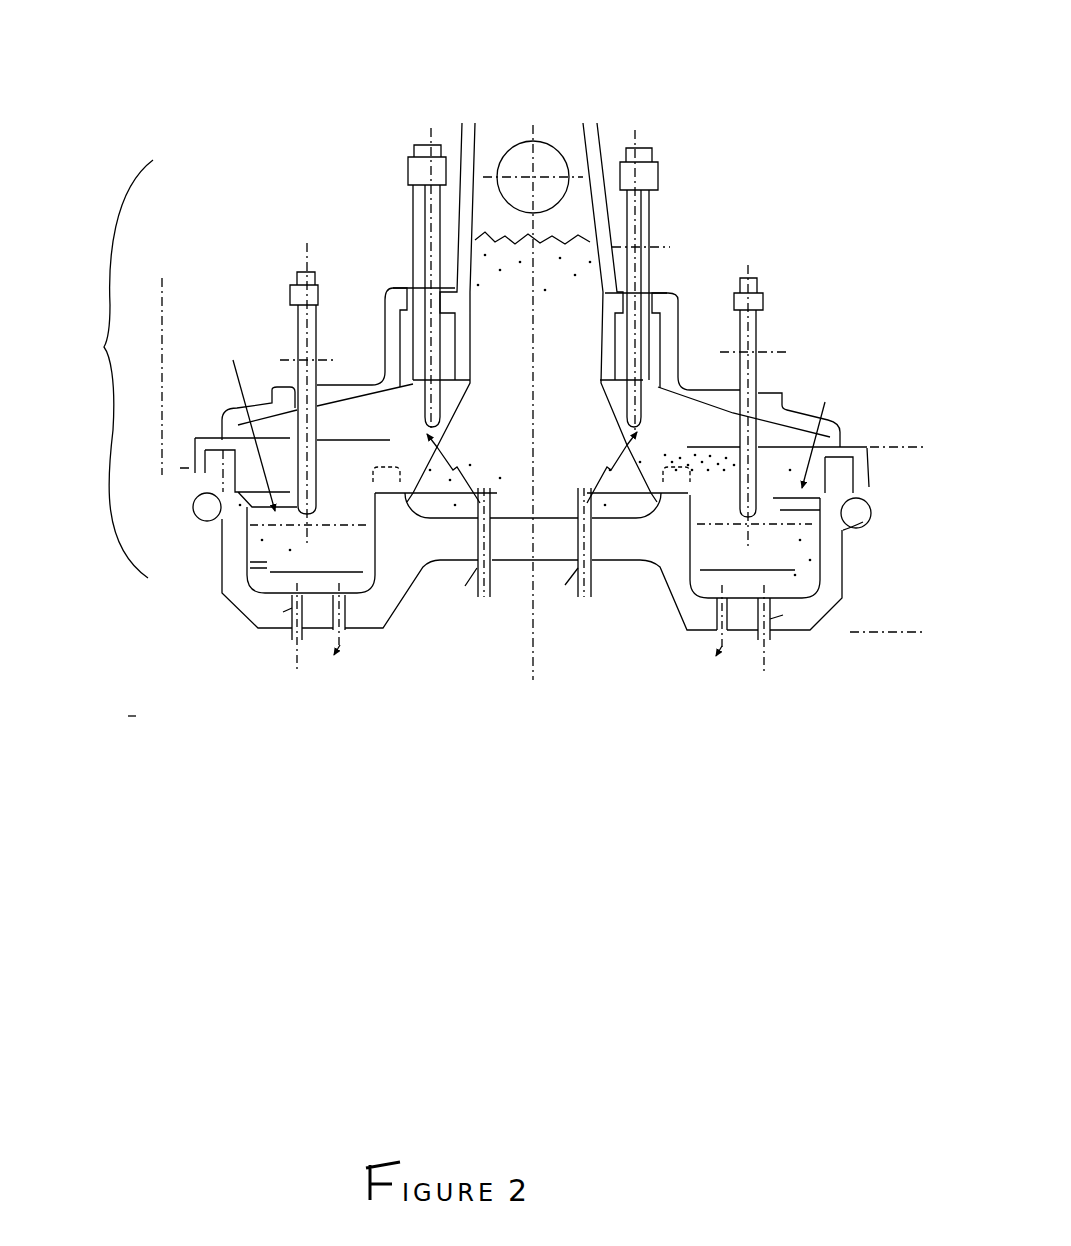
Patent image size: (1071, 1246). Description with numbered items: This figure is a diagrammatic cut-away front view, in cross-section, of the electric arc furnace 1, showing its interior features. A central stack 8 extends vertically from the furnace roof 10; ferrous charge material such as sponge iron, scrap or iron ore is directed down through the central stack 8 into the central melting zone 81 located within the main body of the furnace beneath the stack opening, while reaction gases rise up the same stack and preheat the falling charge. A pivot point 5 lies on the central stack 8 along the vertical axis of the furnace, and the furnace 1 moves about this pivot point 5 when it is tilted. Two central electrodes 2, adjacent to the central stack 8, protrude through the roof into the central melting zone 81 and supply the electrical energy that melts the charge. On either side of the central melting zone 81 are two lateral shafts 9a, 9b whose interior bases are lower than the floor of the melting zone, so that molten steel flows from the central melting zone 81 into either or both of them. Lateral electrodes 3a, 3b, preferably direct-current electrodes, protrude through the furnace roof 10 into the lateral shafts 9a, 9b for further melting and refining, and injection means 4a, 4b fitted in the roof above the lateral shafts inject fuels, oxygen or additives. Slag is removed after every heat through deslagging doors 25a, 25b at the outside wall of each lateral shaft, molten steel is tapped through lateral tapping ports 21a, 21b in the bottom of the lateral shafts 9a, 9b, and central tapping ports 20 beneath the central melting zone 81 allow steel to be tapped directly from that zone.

The electric arc furnace 1 is at (104, 369).
The central electrodes 2 is at (425, 201).
The lateral electrode 3a is at (302, 339).
The lateral electrode 3b is at (758, 330).
The injection means 4a is at (262, 489).
The injection means 4b is at (782, 519).
The pivot point 5 is at (538, 180).
The central stack 8 is at (552, 273).
The lateral shaft 9a is at (350, 455).
The lateral shaft 9b is at (715, 477).
The furnace roof 10 is at (390, 312).
The central tapping ports 20 is at (486, 566).
The lateral tapping port 21a is at (341, 629).
The lateral tapping port 21b is at (722, 633).
The deslagging door 25a is at (220, 475).
The deslagging door 25b is at (852, 484).
The central melting zone 81 is at (517, 470).